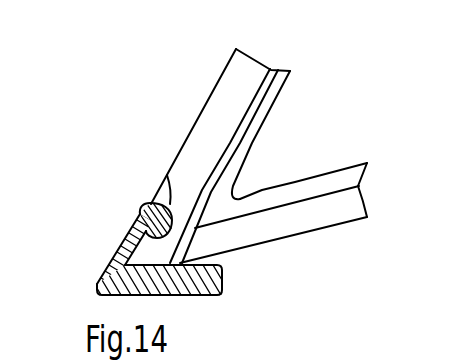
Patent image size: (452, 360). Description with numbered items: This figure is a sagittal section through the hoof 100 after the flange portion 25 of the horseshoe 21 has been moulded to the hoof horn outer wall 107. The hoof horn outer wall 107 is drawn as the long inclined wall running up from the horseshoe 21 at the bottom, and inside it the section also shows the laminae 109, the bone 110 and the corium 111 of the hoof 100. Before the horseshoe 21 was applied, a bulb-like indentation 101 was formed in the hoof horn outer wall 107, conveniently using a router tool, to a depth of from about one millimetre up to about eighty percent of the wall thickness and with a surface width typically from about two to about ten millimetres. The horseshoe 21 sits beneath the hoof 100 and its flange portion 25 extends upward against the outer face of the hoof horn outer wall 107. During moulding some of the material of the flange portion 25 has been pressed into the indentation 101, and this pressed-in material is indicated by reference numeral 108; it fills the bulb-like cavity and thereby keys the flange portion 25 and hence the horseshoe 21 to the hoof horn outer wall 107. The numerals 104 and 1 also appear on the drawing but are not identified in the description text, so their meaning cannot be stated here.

The hoof 100 is at (281, 142).
The hoof horn outer wall 107 is at (223, 111).
The laminae 109 is at (268, 70).
The bone 110 is at (288, 173).
The corium 111 is at (350, 182).
The support arm 104 is at (367, 217).
The indentation 101 is at (167, 175).
The material of the flange portion pressed into the indentation 108 is at (142, 214).
The flange portion 25 is at (107, 243).
The horseshoe 21 is at (145, 297).
The device 1 is at (6, 170).